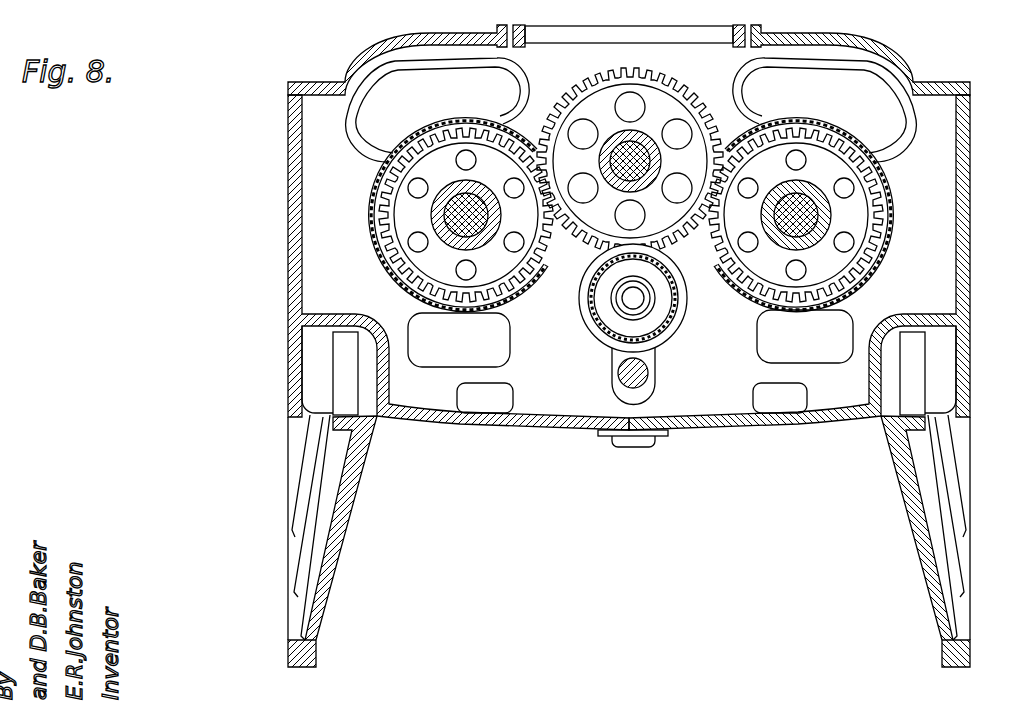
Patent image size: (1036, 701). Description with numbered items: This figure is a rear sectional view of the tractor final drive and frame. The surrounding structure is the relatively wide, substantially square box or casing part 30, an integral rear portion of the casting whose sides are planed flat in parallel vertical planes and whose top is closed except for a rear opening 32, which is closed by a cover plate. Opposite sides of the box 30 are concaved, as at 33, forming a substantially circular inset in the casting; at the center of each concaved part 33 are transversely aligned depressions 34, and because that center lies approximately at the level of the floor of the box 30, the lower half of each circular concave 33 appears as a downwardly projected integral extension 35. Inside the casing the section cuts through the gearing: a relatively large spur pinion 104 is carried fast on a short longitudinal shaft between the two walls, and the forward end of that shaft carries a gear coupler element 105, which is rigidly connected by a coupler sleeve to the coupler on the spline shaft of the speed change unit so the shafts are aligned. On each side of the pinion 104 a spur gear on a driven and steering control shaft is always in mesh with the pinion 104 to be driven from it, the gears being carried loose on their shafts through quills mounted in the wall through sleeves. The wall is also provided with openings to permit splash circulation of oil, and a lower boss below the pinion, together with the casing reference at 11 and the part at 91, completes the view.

The casing 11 is at (615, 346).
The box or casing part 30 is at (882, 52).
The rear opening 32 is at (566, 30).
The concaved side 33 is at (288, 222).
The transversely aligned depressions 34 is at (375, 377).
The downwardly projected integral extension 35 is at (323, 597).
The shaft bearing boss 91 is at (621, 298).
The spur pinion 104 is at (630, 156).
The gear coupler element 105 is at (650, 160).